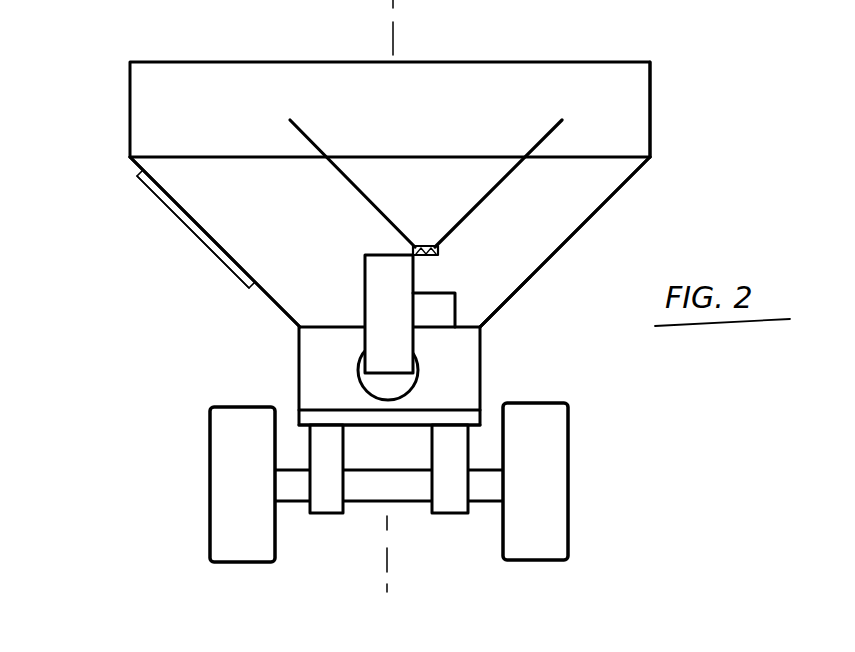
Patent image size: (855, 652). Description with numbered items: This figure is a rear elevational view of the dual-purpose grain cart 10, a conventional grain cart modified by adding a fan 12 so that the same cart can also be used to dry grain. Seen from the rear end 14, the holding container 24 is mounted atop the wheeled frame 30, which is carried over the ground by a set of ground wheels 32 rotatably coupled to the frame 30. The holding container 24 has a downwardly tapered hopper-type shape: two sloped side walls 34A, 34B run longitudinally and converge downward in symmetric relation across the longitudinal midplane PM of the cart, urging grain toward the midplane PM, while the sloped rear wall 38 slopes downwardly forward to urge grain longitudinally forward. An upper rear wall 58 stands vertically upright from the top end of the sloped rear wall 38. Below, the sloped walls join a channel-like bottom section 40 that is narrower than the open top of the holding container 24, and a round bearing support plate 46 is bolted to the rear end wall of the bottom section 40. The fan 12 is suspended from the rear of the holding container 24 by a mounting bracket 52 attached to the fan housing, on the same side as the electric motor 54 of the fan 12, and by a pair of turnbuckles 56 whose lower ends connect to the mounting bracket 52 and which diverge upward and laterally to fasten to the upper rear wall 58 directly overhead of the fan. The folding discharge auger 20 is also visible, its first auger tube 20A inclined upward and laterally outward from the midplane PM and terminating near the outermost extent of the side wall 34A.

The dual-purpose grain cart 10 is at (72, 83).
The longitudinal midplane PM is at (396, 31).
The holding container 24 is at (633, 107).
The upper rear wall 58 is at (640, 127).
The turnbuckles 56 is at (372, 193).
The discharge auger 20 is at (177, 230).
The first auger tube 20A is at (155, 193).
The sloped side wall 34A is at (205, 250).
The sloped side wall 34B is at (585, 225).
The sloped rear wall 38 is at (533, 276).
The fan 12 is at (388, 278).
The mounting bracket 52 is at (421, 286).
The electric motor 54 is at (445, 315).
The bottom section 40 is at (314, 378).
The bearing support plate 46 is at (400, 383).
The rear end 14 is at (503, 372).
The wheeled frame 30 is at (384, 417).
The ground wheels 32 is at (228, 478).